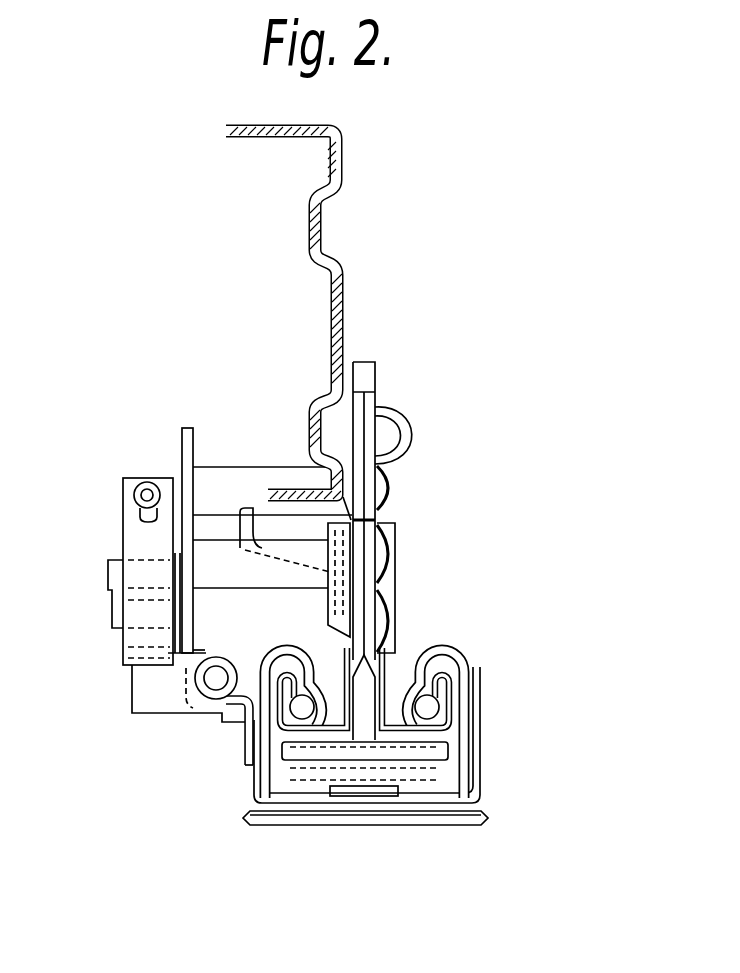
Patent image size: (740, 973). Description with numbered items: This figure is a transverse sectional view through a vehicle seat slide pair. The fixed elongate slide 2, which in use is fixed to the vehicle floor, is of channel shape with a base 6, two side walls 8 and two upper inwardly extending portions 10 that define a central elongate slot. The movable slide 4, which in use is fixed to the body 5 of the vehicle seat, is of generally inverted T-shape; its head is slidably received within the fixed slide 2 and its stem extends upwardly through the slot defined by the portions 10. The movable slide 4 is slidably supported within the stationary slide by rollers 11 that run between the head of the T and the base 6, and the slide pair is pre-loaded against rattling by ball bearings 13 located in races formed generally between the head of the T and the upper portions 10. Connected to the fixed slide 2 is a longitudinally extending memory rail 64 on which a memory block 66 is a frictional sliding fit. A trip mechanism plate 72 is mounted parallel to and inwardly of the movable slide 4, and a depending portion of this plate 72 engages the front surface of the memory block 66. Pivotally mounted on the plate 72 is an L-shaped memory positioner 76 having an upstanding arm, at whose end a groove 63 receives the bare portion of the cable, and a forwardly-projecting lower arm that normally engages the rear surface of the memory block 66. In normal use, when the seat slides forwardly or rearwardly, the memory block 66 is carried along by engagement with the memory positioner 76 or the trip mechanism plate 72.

The fixed elongate slide 2 is at (462, 797).
The movable slide 4 is at (393, 657).
The body of vehicle seat 5 is at (340, 290).
The base 6 is at (374, 805).
The side walls 8 is at (472, 743).
The upper inwardly extending portions 10 is at (322, 680).
The rollers 11 is at (318, 792).
The ball bearings 13 is at (480, 668).
The groove 63 is at (123, 512).
The memory rail 64 is at (213, 657).
The memory block 66 is at (174, 728).
The trip mechanism plate 72 is at (197, 420).
The memory positioner 76 is at (112, 658).